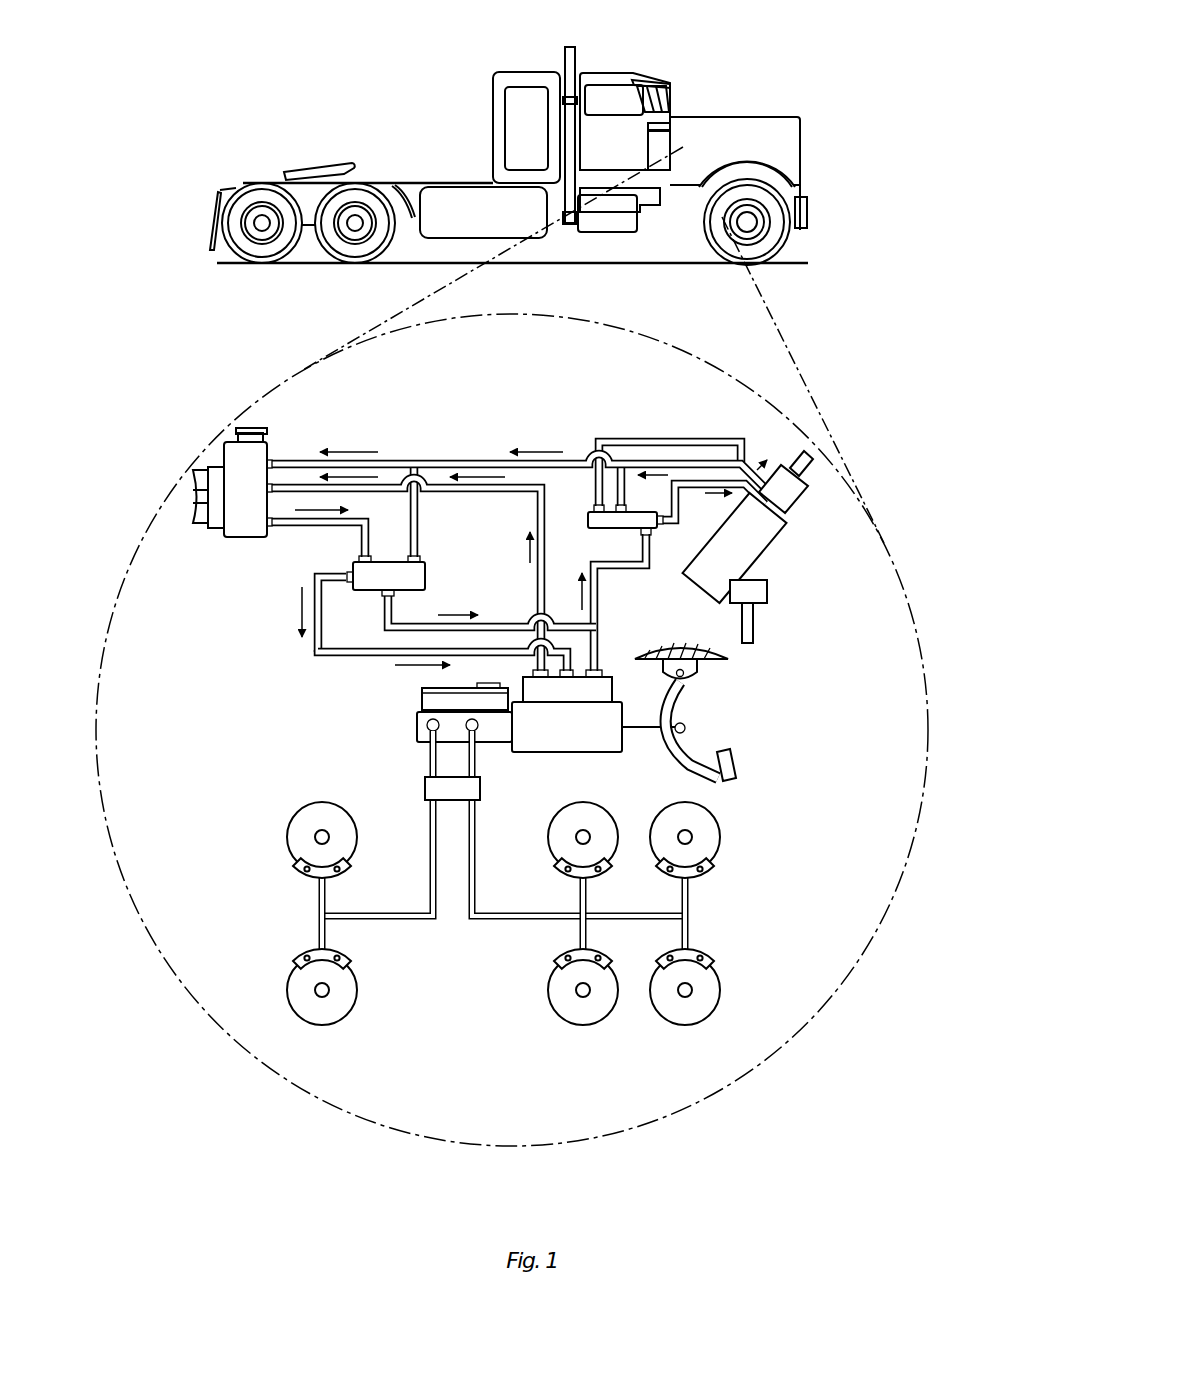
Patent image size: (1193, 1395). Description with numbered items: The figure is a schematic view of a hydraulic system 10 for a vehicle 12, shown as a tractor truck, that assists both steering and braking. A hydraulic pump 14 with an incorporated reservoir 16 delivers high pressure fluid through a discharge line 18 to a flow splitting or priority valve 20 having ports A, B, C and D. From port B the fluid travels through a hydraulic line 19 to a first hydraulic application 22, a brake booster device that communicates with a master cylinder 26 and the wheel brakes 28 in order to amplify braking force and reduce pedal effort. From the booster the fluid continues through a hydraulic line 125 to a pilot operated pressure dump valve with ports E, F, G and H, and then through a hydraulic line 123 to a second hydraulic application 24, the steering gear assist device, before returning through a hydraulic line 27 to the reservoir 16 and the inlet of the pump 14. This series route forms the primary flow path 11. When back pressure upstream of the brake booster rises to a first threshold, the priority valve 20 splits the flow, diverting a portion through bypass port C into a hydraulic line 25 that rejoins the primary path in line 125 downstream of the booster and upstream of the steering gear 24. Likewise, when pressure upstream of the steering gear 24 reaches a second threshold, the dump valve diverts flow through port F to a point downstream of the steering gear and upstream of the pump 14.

The hydraulic system 10 is at (889, 462).
The primary flow path 11 is at (347, 655).
The vehicle 12 is at (751, 108).
The hydraulic pump 14 is at (210, 527).
The reservoir 16 is at (270, 452).
The discharge line 18 is at (315, 535).
The hydraulic line 19 is at (315, 652).
The flow splitting valve 20 is at (428, 577).
The first hydraulic application 22 is at (607, 675).
The second hydraulic application 24 is at (775, 548).
The hydraulic line 25 is at (384, 620).
The master cylinder 26 is at (415, 729).
The hydraulic line 27 is at (447, 457).
The brakes 28 is at (262, 917).
The hydraulic line 123 is at (692, 488).
The hydraulic line 125 is at (648, 555).